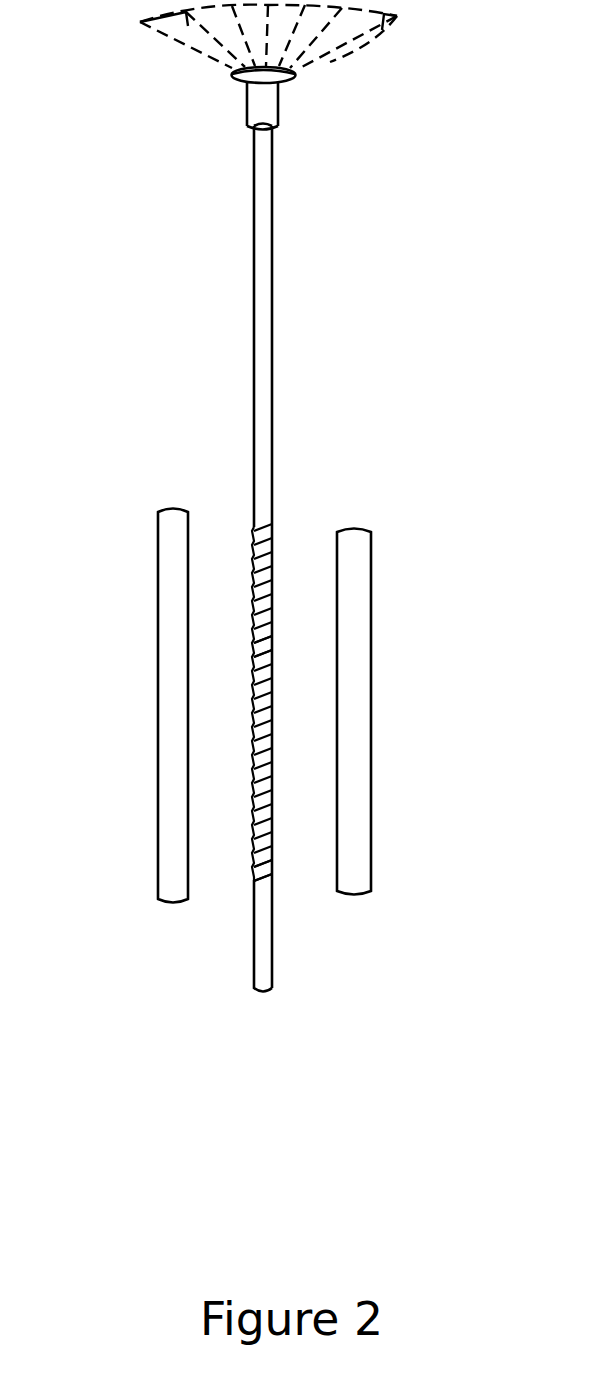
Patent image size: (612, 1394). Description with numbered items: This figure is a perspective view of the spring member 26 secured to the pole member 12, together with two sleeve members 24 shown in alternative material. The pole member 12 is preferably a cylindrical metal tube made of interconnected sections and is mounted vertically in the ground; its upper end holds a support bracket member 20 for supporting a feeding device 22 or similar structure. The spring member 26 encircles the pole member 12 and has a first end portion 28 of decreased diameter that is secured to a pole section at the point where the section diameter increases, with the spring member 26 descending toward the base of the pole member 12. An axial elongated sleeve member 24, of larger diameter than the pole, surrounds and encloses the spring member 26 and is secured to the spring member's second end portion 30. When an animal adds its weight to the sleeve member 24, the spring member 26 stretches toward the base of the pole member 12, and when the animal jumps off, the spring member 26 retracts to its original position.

The pole member 12 is at (263, 300).
The support bracket member 20 is at (279, 106).
The feeding device 22 is at (370, 42).
The sleeve member 24 is at (172, 687).
The spring member 26 is at (262, 652).
The first end portion 28 is at (258, 530).
The second end portion 30 is at (260, 873).